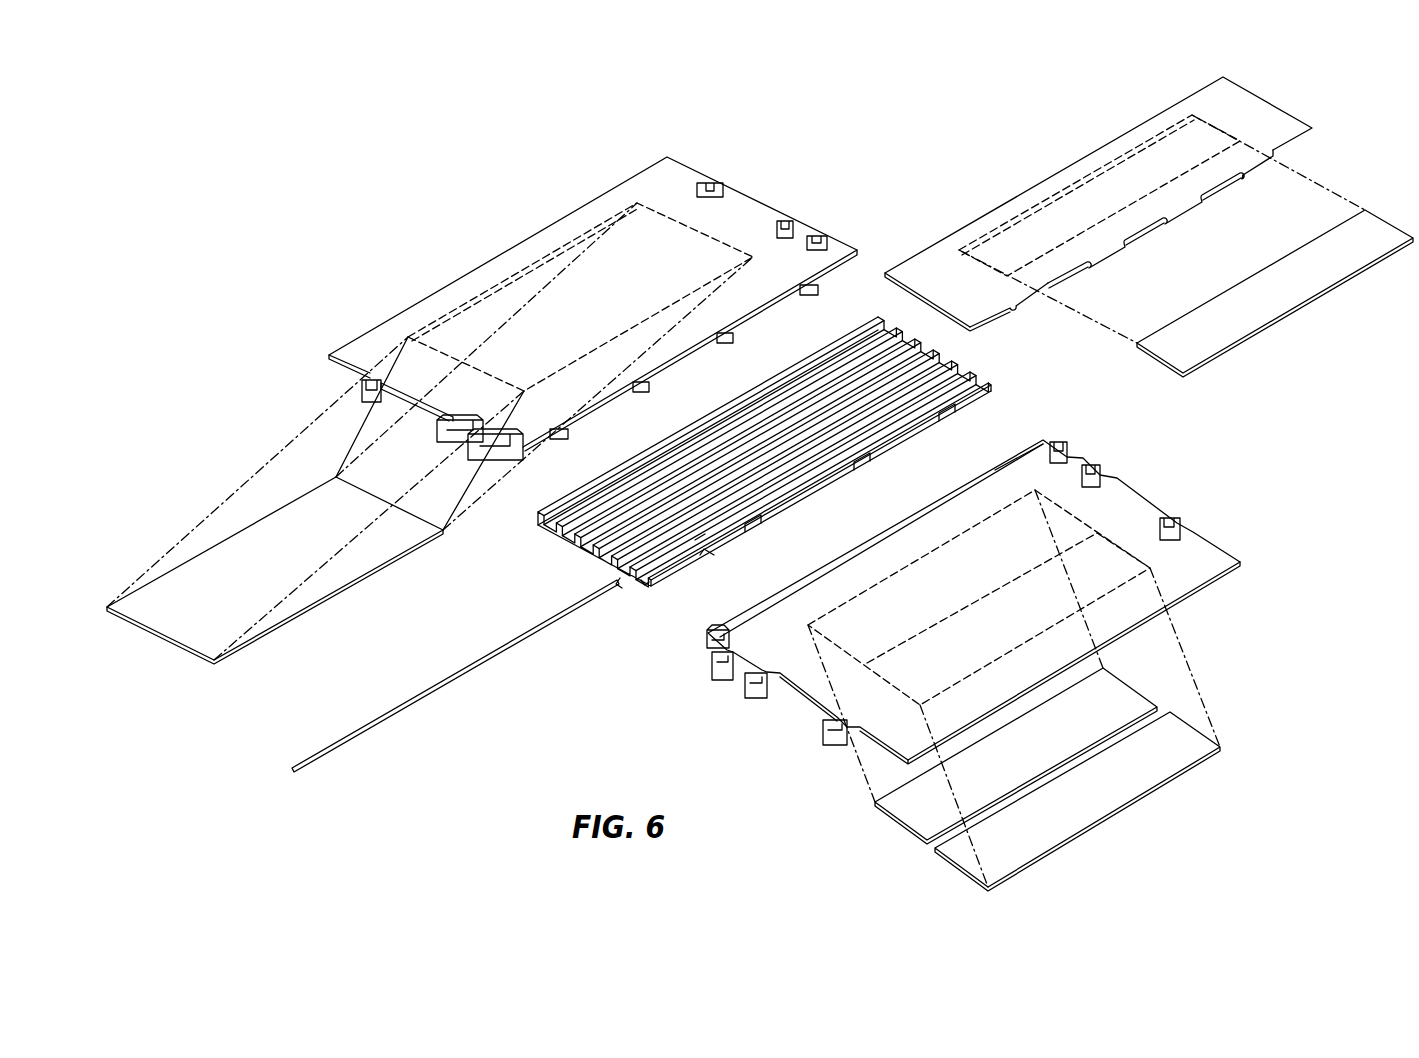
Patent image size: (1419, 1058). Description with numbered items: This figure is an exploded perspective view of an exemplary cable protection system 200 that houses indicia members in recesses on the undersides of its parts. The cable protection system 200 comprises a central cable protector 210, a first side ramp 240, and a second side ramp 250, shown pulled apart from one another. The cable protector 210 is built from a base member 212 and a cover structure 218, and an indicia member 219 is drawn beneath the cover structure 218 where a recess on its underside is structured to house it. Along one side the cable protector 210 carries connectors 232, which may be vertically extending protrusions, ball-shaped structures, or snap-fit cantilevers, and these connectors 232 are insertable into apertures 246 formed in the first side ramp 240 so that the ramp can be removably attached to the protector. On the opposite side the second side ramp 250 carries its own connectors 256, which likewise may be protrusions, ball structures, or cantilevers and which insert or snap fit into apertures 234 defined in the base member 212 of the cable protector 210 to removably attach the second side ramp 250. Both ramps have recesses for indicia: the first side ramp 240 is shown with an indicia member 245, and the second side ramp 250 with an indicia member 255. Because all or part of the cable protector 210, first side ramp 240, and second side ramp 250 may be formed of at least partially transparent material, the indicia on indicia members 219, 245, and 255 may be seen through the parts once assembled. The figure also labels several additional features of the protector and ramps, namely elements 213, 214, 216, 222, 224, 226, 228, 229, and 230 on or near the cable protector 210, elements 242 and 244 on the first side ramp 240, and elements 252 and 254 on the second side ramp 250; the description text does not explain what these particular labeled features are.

The cable protection system 200 is at (340, 180).
The cable protector 210 is at (763, 373).
The base member 212 is at (562, 551).
The front edge of base 213 is at (645, 583).
The fin 214 is at (917, 333).
The fins 216 is at (933, 343).
The cover structure 218 is at (1005, 212).
The indicia member 219 is at (1261, 305).
The notch 222 is at (745, 515).
The notch 224 is at (705, 527).
The notch 226 is at (1282, 157).
The tabs 228 is at (1150, 233).
The edge 229 is at (625, 582).
The thermal strip 230 is at (405, 695).
The connectors 232 is at (772, 509).
The apertures 234 is at (590, 482).
The first side ramp 240 is at (1170, 643).
The hooks 242 is at (715, 658).
The tabs 244 is at (1065, 448).
The indicia member 245 is at (1012, 761).
The apertures 246 is at (1012, 458).
The second side ramp 250 is at (462, 250).
The hooks 252 is at (363, 387).
The tabs 254 is at (722, 183).
The indicia member 255 is at (256, 578).
The connectors 256 is at (728, 344).